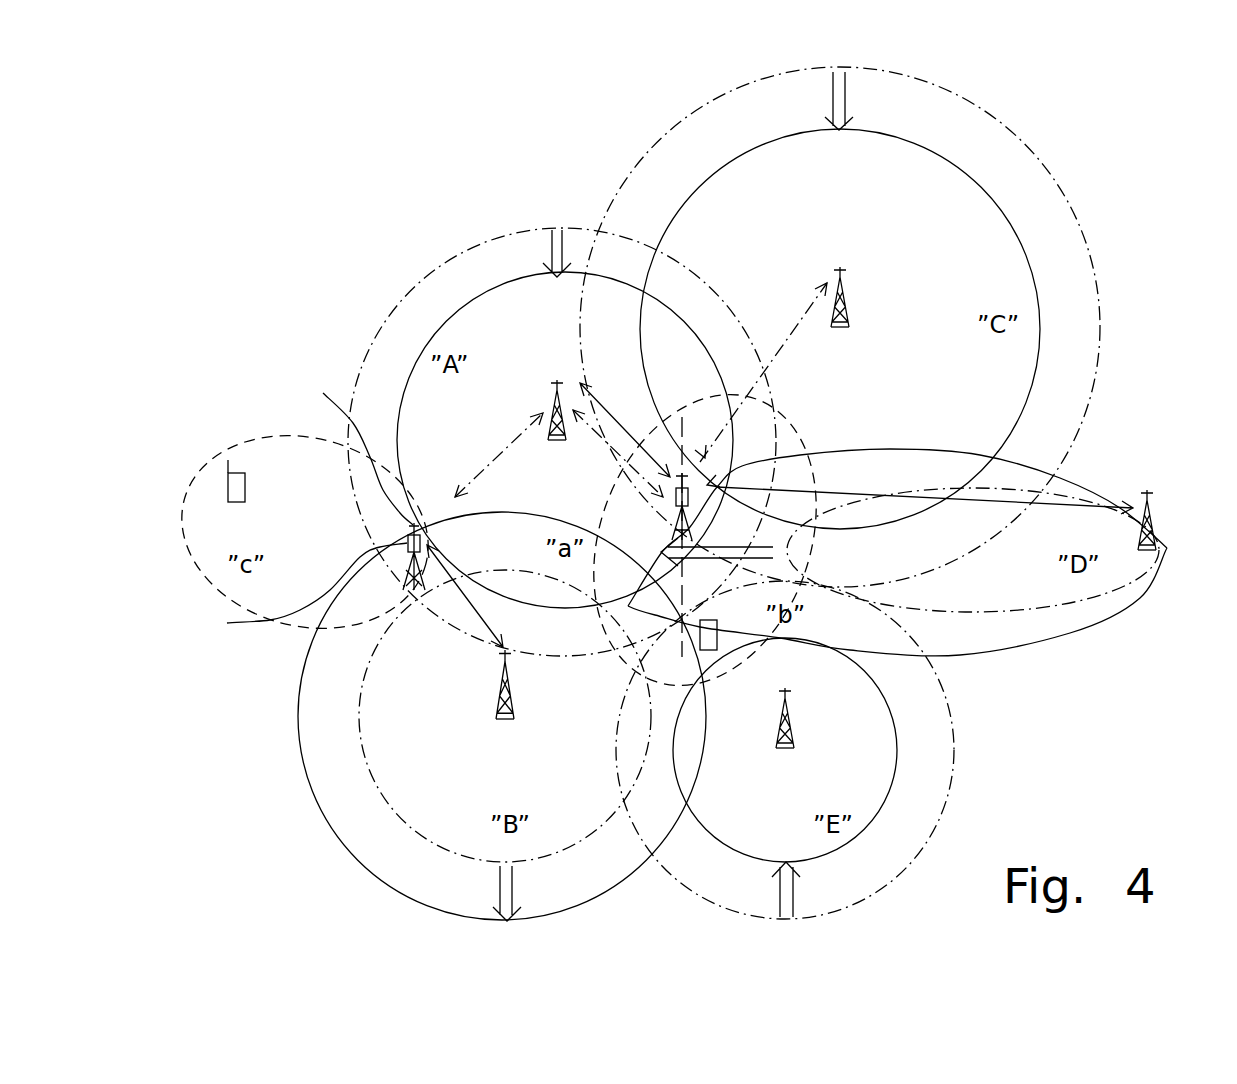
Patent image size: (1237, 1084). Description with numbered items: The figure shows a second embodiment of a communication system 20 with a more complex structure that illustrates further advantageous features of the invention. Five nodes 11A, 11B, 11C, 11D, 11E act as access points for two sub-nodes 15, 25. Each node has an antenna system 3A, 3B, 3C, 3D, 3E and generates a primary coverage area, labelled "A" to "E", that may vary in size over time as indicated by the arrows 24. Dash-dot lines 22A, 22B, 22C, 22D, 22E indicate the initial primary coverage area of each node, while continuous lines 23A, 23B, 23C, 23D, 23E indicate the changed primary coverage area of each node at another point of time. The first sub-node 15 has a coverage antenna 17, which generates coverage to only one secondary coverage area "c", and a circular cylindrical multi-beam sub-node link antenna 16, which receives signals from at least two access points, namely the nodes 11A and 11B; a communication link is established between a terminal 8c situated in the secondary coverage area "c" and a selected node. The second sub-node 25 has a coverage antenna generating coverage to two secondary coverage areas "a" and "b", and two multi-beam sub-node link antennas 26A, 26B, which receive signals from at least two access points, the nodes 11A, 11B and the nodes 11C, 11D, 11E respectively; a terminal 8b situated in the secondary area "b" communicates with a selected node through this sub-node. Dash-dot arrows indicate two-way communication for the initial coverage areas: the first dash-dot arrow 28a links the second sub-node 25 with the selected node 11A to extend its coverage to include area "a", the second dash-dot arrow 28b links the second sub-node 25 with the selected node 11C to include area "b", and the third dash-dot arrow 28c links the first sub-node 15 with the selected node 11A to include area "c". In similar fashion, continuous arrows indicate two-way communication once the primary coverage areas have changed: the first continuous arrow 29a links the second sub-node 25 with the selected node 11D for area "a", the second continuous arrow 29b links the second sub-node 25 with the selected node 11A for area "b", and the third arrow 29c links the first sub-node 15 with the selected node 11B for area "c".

The communication system 20 is at (378, 193).
The initial primary coverage area of node A 22A is at (562, 425).
The changed primary coverage area of node A 23A is at (565, 440).
The antenna system of node A 3A is at (564, 390).
The node A 11A is at (550, 459).
The initial primary coverage area of node C 22C is at (840, 327).
The changed primary coverage area of node C 23C is at (840, 329).
The antenna system of node C 3C is at (847, 278).
The node C 11C is at (853, 343).
The initial primary coverage area of node D 22D is at (973, 552).
The changed primary coverage area of node D 23D is at (897, 561).
The antenna system of node D 3D is at (1156, 503).
The node D 11D is at (1180, 556).
The initial primary coverage area of node B 22B is at (505, 716).
The changed primary coverage area of node B 23B is at (490, 716).
The antenna system of node B 3B is at (499, 660).
The node B 11B is at (514, 732).
The initial primary coverage area of node E 22E is at (812, 750).
The changed primary coverage area of node E 23E is at (785, 750).
The antenna system of node E 3E is at (803, 711).
The node E 11E is at (795, 767).
The arrows 24 is at (691, 496).
The second sub-node 25 is at (677, 512).
The multi-beam sub-node link antenna 26A is at (705, 458).
The multi-beam sub-node link antenna 26B is at (723, 483).
The first dash-dot arrow 28a is at (618, 453).
The second dash-dot arrow 28b is at (763, 372).
The third dash-dot arrow 28c is at (495, 455).
The first continuous arrow 29a is at (925, 514).
The second continuous arrow 29b is at (625, 430).
The third continuous arrow 29c is at (468, 596).
The terminal 8c is at (228, 478).
The terminal 8b is at (712, 652).
The first sub-node 15 is at (413, 571).
The circular cylindrical multi-beam sub-node link antenna 16 is at (300, 592).
The coverage antenna 17 is at (355, 447).